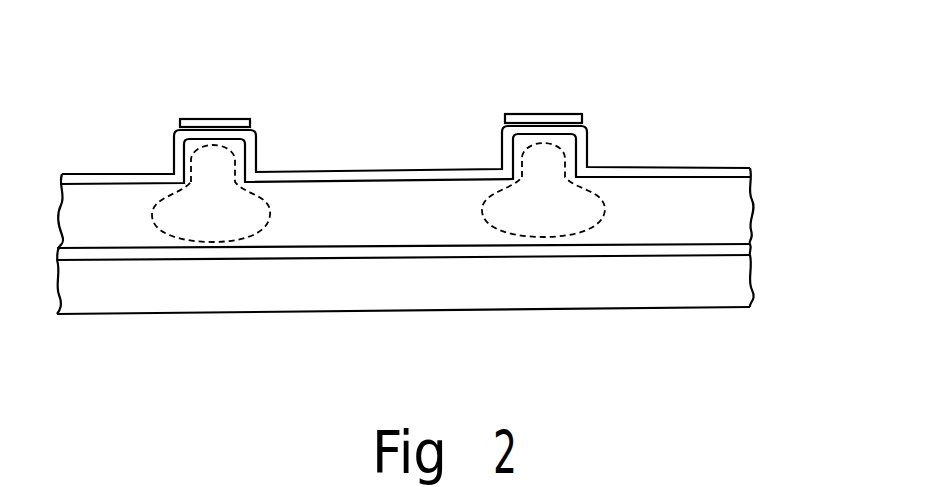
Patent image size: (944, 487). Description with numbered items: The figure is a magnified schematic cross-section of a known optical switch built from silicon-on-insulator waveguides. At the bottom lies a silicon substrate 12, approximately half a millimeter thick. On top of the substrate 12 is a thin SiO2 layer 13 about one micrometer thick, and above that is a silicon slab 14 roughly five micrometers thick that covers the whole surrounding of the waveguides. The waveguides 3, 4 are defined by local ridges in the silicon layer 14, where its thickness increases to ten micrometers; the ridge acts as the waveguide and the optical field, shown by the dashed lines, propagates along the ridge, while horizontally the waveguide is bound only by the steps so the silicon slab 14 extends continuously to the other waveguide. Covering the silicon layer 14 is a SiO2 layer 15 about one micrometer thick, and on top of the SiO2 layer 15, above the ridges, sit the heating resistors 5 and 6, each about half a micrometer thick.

The waveguide 3 is at (188, 158).
The waveguide 4 is at (568, 153).
The heating resistor 5 is at (207, 118).
The heating resistor 6 is at (541, 113).
The substrate 12 is at (735, 287).
The SiO2 layer 13 is at (737, 250).
The silicon layer 14 is at (740, 203).
The SiO2 layer 15 is at (750, 173).